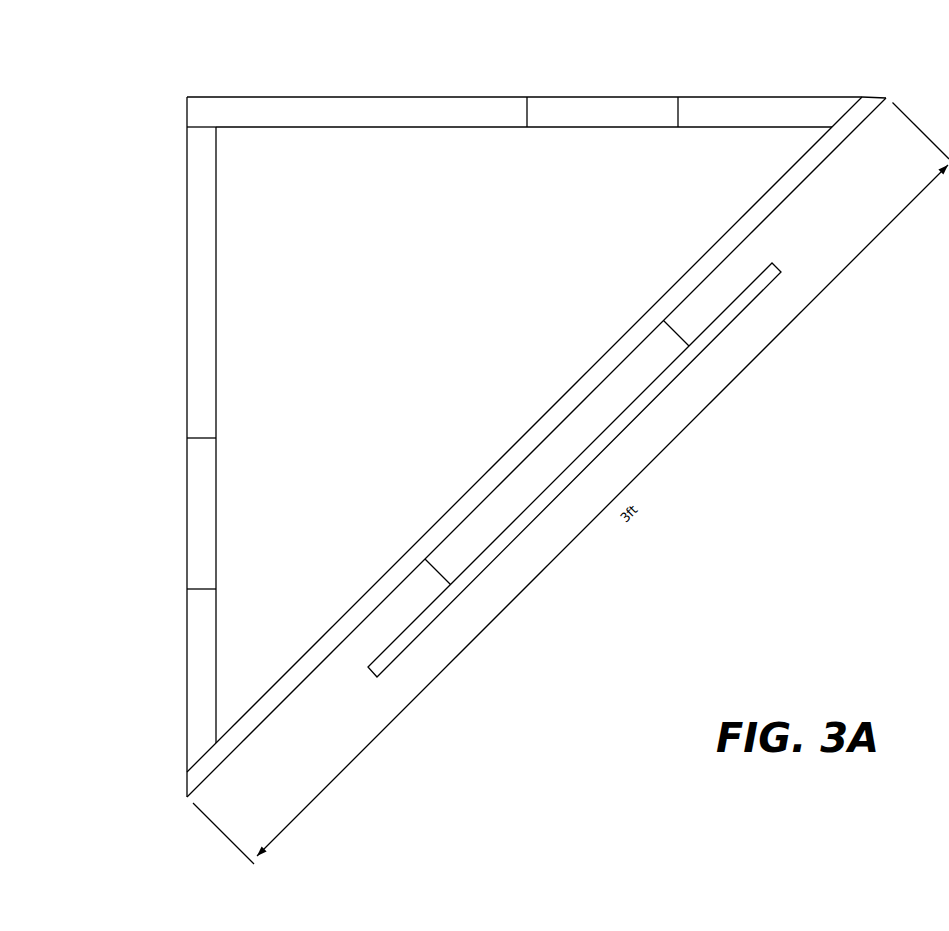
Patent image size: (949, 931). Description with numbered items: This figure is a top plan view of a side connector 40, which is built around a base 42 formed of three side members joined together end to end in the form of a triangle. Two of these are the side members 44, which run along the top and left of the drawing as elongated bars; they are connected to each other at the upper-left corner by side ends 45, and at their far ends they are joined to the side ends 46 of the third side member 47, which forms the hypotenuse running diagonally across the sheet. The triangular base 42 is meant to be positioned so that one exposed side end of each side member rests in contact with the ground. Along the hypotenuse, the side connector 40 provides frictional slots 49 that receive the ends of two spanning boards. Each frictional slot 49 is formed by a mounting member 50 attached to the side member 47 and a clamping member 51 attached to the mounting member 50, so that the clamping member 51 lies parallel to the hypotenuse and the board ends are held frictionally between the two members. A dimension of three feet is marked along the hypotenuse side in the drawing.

The side connector 40 is at (428, 301).
The base 42 is at (463, 96).
The side member 44 is at (361, 113).
The side ends 45 is at (187, 117).
The side ends 46 is at (863, 97).
The third side member (hypotenuse) 47 is at (480, 492).
The frictional slot 49 is at (717, 292).
The mounting member 50 is at (556, 452).
The clamping member 51 is at (632, 408).